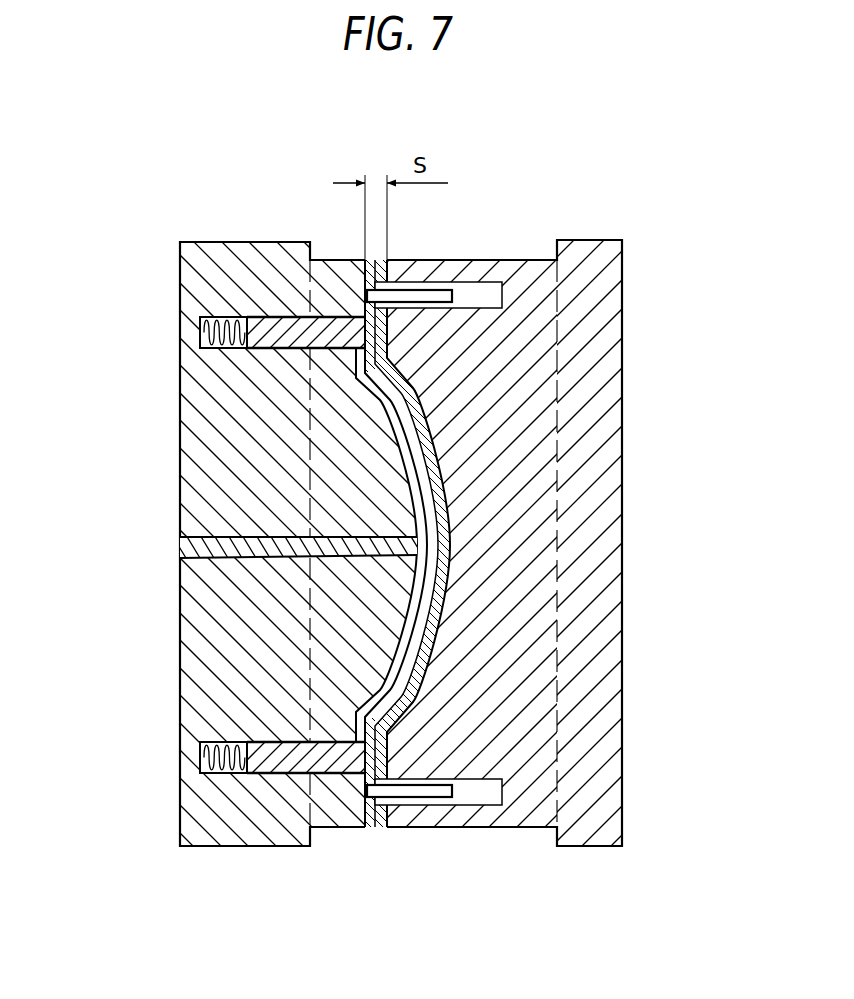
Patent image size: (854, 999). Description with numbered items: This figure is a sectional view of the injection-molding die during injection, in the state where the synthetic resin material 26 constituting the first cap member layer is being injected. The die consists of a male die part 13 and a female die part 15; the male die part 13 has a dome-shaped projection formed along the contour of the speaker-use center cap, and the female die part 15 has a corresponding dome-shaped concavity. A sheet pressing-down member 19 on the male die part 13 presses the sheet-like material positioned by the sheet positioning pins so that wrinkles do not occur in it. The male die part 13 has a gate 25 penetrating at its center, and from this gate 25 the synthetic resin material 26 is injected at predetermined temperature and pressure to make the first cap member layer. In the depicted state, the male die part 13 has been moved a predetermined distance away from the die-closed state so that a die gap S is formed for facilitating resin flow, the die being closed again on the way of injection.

The male die part 13 is at (237, 242).
The female die part 15 is at (622, 347).
The sheet pressing-down member 19 is at (235, 462).
The gate 25 is at (237, 545).
The synthetic resin material 26 is at (233, 558).